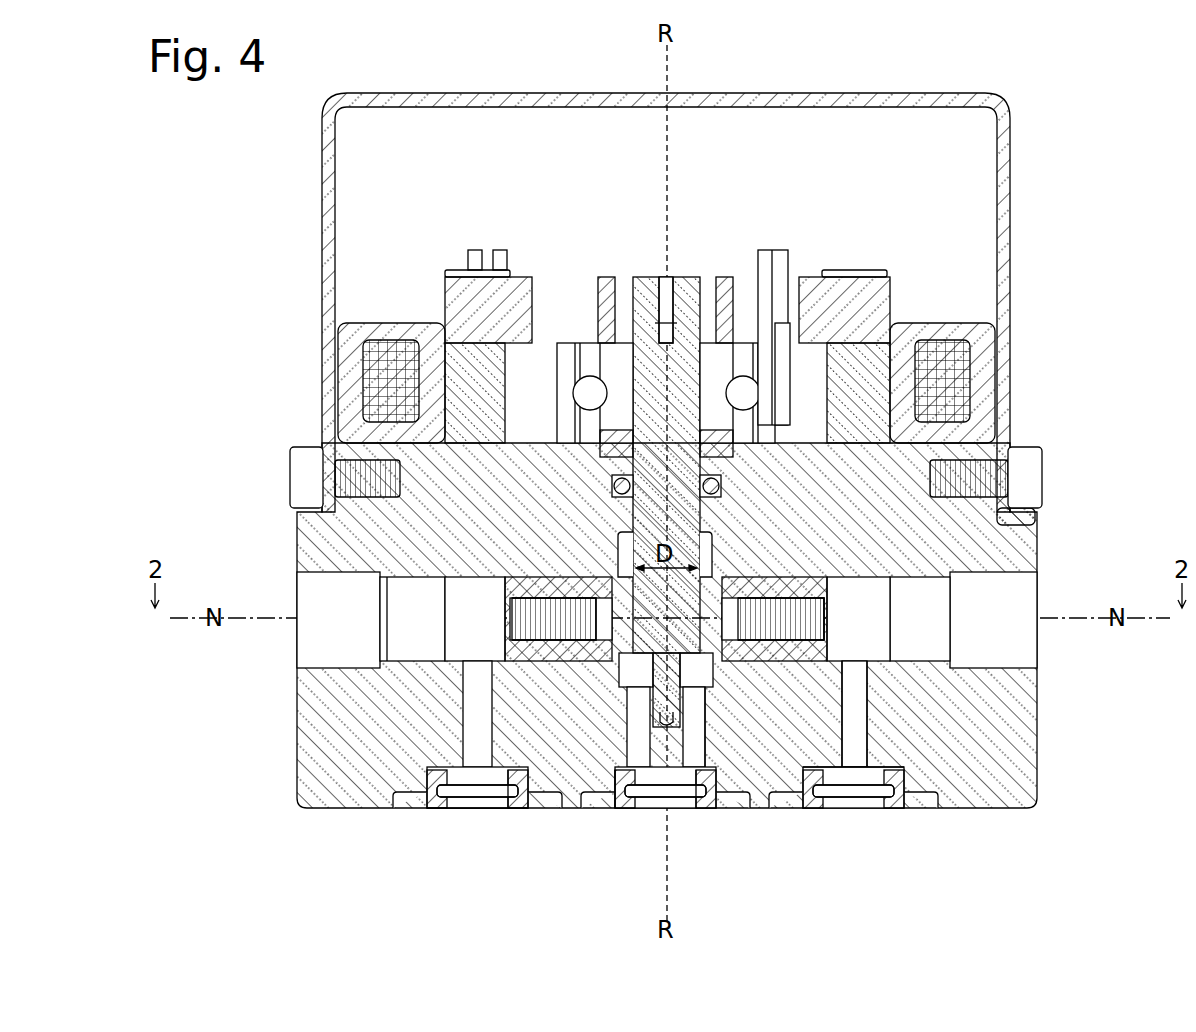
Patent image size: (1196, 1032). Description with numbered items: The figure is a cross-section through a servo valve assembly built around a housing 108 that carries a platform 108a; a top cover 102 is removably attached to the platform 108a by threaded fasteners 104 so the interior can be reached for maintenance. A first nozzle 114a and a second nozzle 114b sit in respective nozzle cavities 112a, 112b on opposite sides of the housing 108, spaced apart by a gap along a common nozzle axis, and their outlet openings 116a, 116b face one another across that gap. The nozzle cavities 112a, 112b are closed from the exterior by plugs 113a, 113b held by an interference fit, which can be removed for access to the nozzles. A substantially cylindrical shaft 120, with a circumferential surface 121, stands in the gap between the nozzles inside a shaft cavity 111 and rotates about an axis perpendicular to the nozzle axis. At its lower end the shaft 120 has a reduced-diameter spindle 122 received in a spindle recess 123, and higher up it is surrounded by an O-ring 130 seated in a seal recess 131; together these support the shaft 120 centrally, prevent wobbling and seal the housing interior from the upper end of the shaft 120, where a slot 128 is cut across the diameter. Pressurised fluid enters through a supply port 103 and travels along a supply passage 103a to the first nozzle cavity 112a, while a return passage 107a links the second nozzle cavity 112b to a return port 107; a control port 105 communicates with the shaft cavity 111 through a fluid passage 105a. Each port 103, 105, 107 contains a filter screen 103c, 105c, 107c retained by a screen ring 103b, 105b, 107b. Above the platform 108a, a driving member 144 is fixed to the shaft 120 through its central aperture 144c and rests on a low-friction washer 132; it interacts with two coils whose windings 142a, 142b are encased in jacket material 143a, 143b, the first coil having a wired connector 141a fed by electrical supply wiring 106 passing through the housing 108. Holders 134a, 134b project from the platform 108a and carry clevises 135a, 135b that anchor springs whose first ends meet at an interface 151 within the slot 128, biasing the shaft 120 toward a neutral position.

The top cover 102 is at (1012, 188).
The fluid supply port 103 is at (407, 808).
The supply passage 103a is at (452, 808).
The screen ring 103b is at (525, 808).
The filter screen 103c is at (500, 808).
The threaded fasteners 104 is at (1040, 492).
The fluid control port 105 is at (755, 808).
The fluid passage 105a is at (628, 775).
The screen ring 105b is at (635, 778).
The filter screen 105c is at (722, 772).
The electrical supply wiring 106 is at (774, 250).
The fluid return port 107 is at (930, 808).
The return passage 107a is at (868, 720).
The screen ring 107b is at (895, 808).
The filter screen 107c is at (905, 782).
The housing 108 is at (338, 735).
The platform 108a is at (1012, 500).
The shaft cavity 111 is at (708, 548).
The first nozzle cavity 112a is at (445, 612).
The second nozzle cavity 112b is at (920, 636).
The plug 113a is at (325, 640).
The plug 113b is at (965, 598).
The first nozzle 114a is at (478, 660).
The second nozzle 114b is at (862, 690).
The first nozzle outlet opening 116a is at (640, 665).
The second nozzle outlet opening 116b is at (800, 660).
The shaft 120 is at (710, 515).
The circumferential surface 121 is at (626, 545).
The spindle 122 is at (743, 645).
The spindle recess 123 is at (668, 722).
The slot 128 is at (664, 340).
The O-ring 130 is at (720, 487).
The seal recess 131 is at (710, 475).
The washer 132 is at (622, 440).
The first holder 134a is at (470, 357).
The second holder 134b is at (862, 355).
The clevis 135a is at (457, 300).
The clevis 135b is at (845, 290).
The wired connector 141a is at (500, 250).
The coil winding 142a is at (385, 400).
The coil winding 142b is at (945, 385).
The protective jacket material 143a is at (348, 330).
The protective jacket material 143b is at (985, 350).
The driving member 144 is at (722, 370).
The central aperture 144c is at (600, 370).
The interface 151 is at (660, 325).